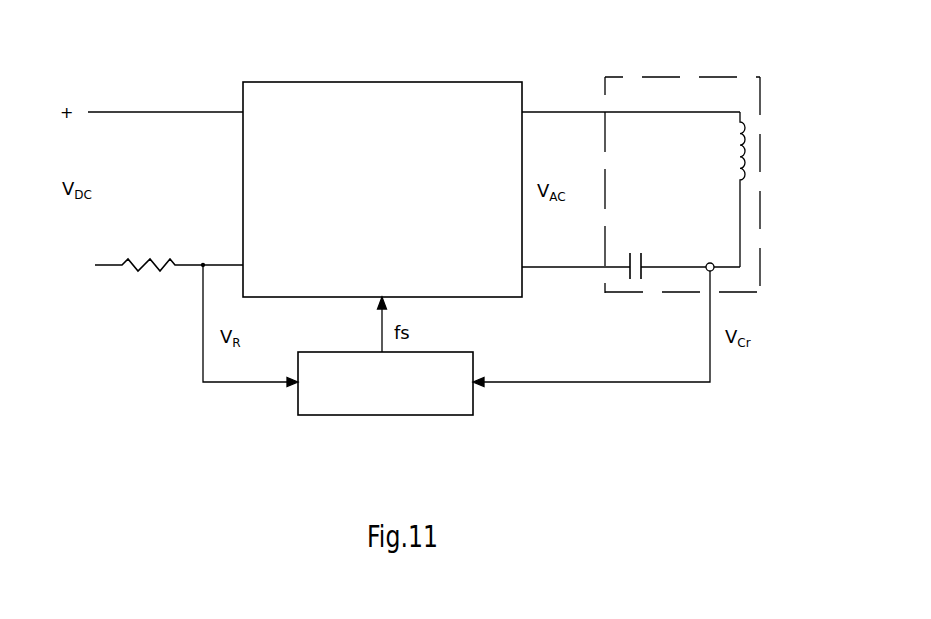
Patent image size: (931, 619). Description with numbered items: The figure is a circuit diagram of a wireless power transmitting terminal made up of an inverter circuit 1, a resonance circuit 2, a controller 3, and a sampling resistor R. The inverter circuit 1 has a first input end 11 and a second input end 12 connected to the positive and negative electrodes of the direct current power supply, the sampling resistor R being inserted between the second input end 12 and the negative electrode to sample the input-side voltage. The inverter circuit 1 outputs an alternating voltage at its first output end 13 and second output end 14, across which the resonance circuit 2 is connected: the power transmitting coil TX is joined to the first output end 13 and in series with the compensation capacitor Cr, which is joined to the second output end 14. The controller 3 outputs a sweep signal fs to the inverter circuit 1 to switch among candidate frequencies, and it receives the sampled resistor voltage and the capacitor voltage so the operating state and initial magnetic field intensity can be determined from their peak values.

The inverter circuit 1 is at (382, 189).
The resonance circuit 2 is at (682, 155).
The controller 3 is at (385, 383).
The first input end 11 is at (183, 112).
The second input end 12 is at (186, 256).
The first output end 13 is at (613, 112).
The second output end 14 is at (558, 268).